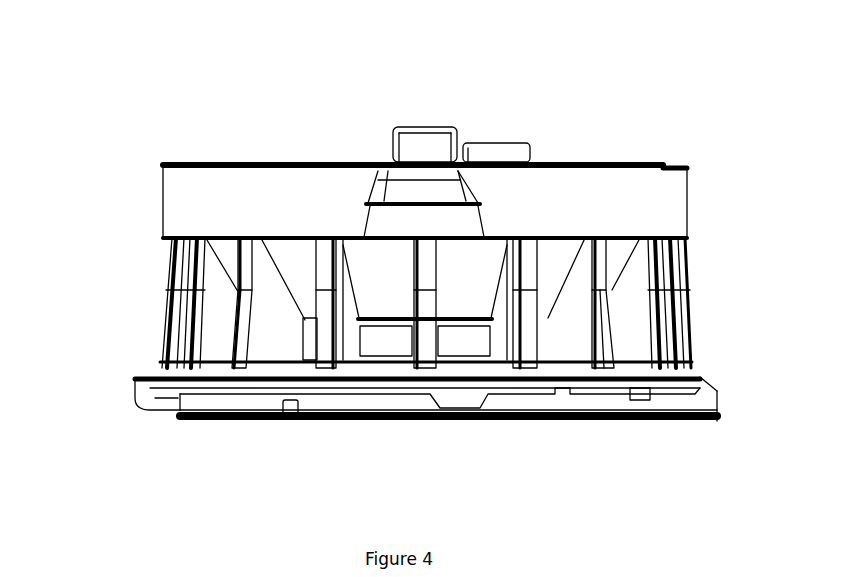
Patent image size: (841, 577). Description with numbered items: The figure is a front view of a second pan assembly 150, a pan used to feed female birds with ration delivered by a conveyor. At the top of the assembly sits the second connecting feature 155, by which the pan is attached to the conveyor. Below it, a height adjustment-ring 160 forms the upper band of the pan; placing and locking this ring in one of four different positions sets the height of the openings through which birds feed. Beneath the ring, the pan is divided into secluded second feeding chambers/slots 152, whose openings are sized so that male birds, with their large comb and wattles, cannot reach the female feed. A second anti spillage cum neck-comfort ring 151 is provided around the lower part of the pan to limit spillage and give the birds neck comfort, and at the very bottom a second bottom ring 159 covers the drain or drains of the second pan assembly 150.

The second pan assembly 150 is at (612, 84).
The second anti spillage cum neck-comfort ring 151 is at (170, 372).
The second feeding chambers/slots 152 is at (664, 292).
The second connecting feature 155 is at (393, 128).
The second bottom ring 159 is at (240, 425).
The height adjustment-ring 160 is at (194, 190).